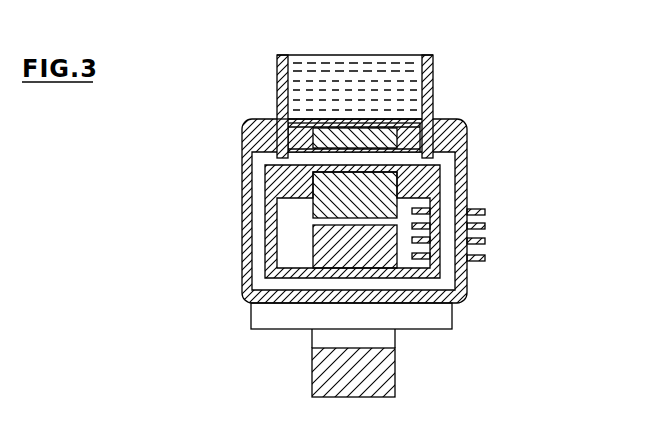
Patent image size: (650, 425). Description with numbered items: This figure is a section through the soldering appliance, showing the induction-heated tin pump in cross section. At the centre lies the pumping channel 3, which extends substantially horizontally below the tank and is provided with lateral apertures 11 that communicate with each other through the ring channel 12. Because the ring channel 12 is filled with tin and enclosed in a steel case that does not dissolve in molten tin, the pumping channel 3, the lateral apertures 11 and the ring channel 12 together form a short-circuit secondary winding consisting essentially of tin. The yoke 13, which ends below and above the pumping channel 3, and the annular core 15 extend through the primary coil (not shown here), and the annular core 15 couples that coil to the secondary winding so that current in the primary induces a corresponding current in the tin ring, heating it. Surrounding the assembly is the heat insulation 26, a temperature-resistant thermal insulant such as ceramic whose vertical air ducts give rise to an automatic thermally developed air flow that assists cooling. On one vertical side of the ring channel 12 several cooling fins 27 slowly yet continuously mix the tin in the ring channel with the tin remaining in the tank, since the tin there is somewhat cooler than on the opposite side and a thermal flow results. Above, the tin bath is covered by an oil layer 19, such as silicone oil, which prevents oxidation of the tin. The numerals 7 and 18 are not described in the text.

The pumping channel 3 is at (399, 158).
The reservoir 7 is at (288, 64).
The lateral apertures 11 is at (282, 157).
The ring channel 12 is at (262, 220).
The yoke 13 is at (282, 118).
The annular core 15 is at (318, 378).
The liquid level 18 is at (389, 82).
The oil layer 19 is at (350, 75).
The heat insulation 26 is at (265, 320).
The cooling fins 27 is at (491, 224).